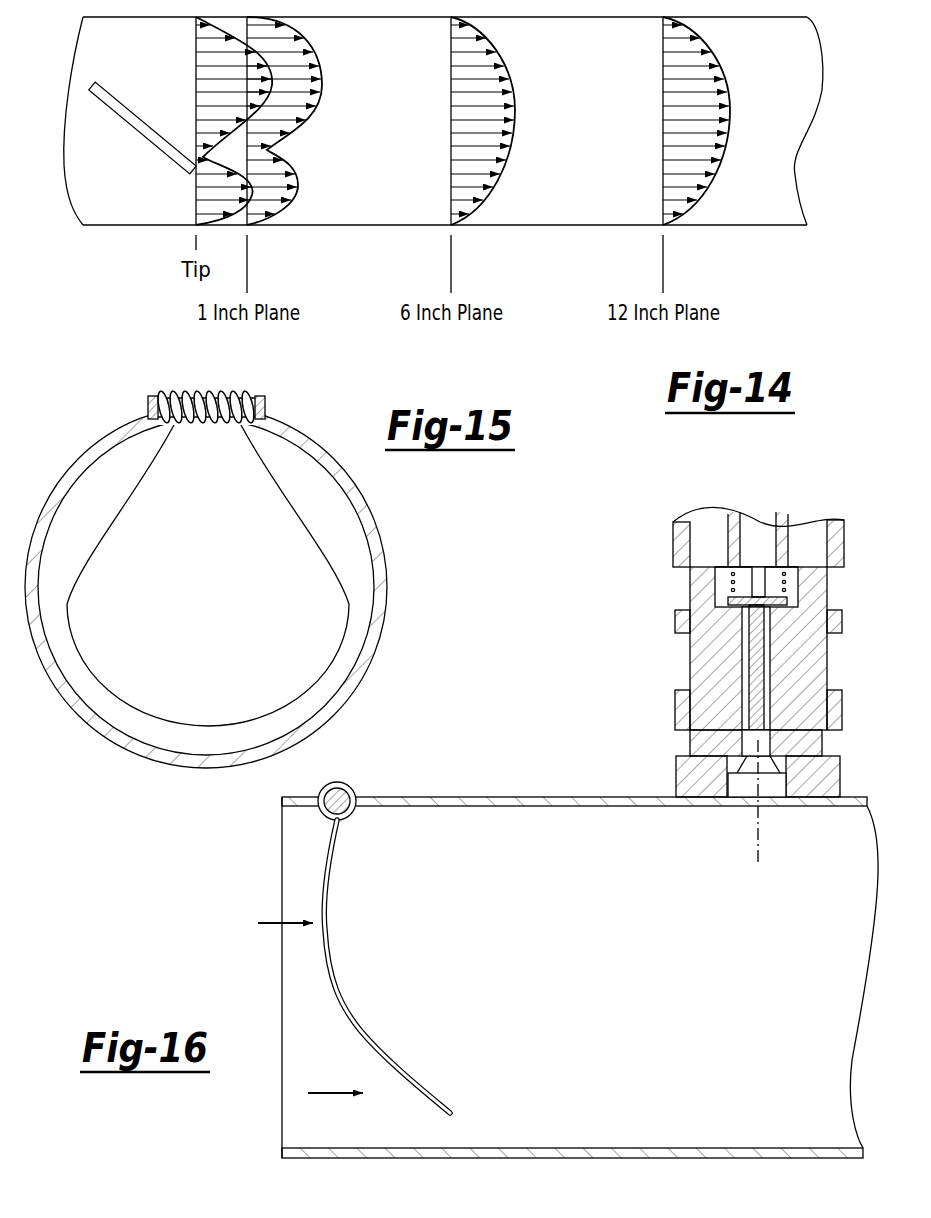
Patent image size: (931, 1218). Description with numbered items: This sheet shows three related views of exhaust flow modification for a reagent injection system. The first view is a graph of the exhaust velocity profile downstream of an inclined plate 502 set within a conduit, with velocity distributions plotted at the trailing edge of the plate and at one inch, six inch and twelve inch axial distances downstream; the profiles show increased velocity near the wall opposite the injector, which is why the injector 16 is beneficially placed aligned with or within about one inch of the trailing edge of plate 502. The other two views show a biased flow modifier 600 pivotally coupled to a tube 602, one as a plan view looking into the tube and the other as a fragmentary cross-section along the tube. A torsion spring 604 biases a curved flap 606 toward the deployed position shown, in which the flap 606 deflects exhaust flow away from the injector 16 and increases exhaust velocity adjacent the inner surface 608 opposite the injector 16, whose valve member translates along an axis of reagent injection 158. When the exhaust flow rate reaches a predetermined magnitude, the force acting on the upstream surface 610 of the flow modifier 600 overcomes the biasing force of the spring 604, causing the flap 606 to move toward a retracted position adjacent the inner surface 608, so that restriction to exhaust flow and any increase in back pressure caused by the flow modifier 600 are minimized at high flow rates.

In FIG. 16, the injector 16 is at (688, 660).
In FIG. 16, the axis of reagent injection 158 is at (757, 838).
In FIG. 14, the inclined plate 502 is at (135, 127).
In FIG. 15, the biased flow modifier 600 is at (92, 387).
In FIG. 16, the biased flow modifier 600 is at (523, 712).
In FIG. 15, the tube 602 is at (94, 728).
In FIG. 16, the tube 602 is at (712, 1152).
In FIG. 15, the torsion spring 604 is at (190, 394).
In FIG. 16, the torsion spring 604 is at (345, 783).
In FIG. 15, the flap 606 is at (134, 516).
In FIG. 16, the flap 606 is at (389, 1072).
In FIG. 15, the inner surface 608 is at (341, 485).
In FIG. 16, the inner surface 608 is at (545, 805).
In FIG. 16, the upstream surface 610 is at (326, 962).